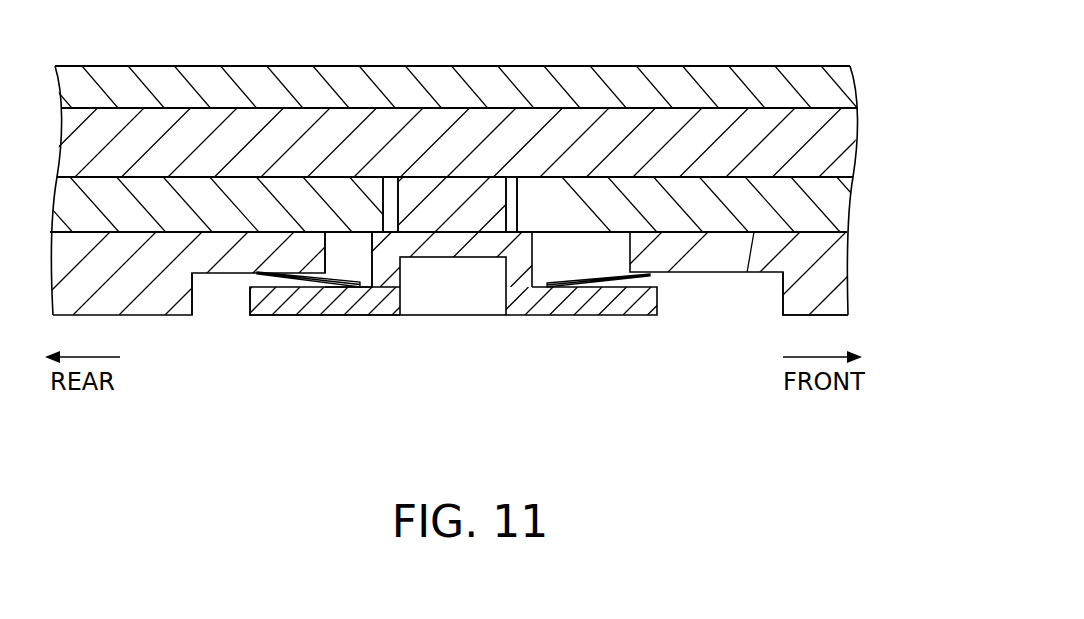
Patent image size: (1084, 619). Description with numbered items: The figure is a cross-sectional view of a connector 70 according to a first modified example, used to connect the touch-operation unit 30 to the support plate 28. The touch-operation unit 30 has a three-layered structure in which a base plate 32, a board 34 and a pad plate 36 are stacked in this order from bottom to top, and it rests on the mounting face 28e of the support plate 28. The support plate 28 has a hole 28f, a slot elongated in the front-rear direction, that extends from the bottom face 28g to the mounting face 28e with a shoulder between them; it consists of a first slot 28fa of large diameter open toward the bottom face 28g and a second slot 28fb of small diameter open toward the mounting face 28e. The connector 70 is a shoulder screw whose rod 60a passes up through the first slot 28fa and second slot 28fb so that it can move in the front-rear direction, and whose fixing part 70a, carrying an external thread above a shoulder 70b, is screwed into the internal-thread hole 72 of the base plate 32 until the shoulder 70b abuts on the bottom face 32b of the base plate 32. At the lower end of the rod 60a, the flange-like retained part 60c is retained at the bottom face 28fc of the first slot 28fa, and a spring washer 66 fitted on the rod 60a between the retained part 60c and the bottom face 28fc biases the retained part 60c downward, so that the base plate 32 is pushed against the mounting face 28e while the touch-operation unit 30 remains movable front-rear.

The support plate 28 is at (808, 277).
The mounting face 28e is at (200, 230).
The hole 28f is at (255, 380).
The first slot 28fa is at (219, 301).
The second slot 28fb is at (345, 253).
The bottom face of the first slot 28fc is at (208, 274).
The bottom face 28g is at (803, 316).
The touch-operation unit 30 is at (915, 73).
The base plate 32 is at (838, 209).
The bottom face of the base plate 32b is at (130, 228).
The board 34 is at (838, 146).
The pad plate 36 is at (838, 90).
The rod 60a is at (390, 280).
The retained part 60c is at (567, 303).
The spring washer 66 is at (624, 290).
The connector 70 is at (515, 319).
The fixing part 70a is at (451, 195).
The shoulder 70b is at (383, 215).
The hole 72 is at (512, 203).